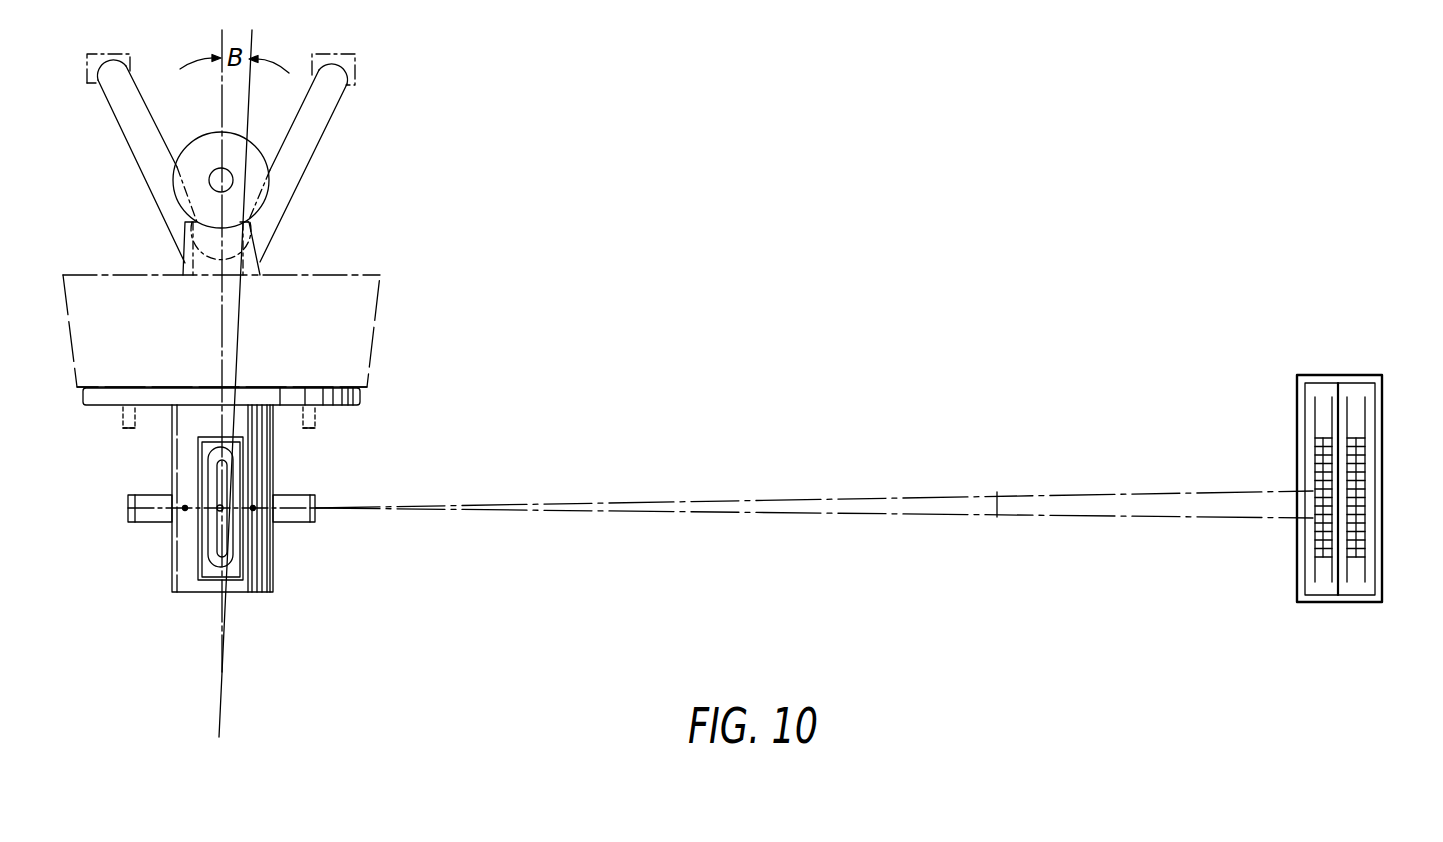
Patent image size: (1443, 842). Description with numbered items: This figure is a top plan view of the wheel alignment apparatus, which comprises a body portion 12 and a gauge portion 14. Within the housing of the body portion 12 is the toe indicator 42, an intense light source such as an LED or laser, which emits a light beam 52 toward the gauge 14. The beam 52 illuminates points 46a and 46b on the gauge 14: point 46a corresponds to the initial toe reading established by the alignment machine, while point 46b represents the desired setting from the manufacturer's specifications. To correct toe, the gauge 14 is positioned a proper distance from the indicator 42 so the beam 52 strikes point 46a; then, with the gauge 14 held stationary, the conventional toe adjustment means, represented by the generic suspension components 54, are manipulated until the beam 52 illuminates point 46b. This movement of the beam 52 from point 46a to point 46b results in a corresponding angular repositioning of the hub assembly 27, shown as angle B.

The body portion 12 is at (165, 592).
The gauge portion 14 is at (1390, 579).
The hub assembly 27 is at (352, 335).
The toe indicator 42 is at (292, 524).
The point 46a is at (1312, 519).
The point 46b is at (1312, 491).
The light beam 52 is at (1027, 492).
The suspension components 54 is at (334, 173).